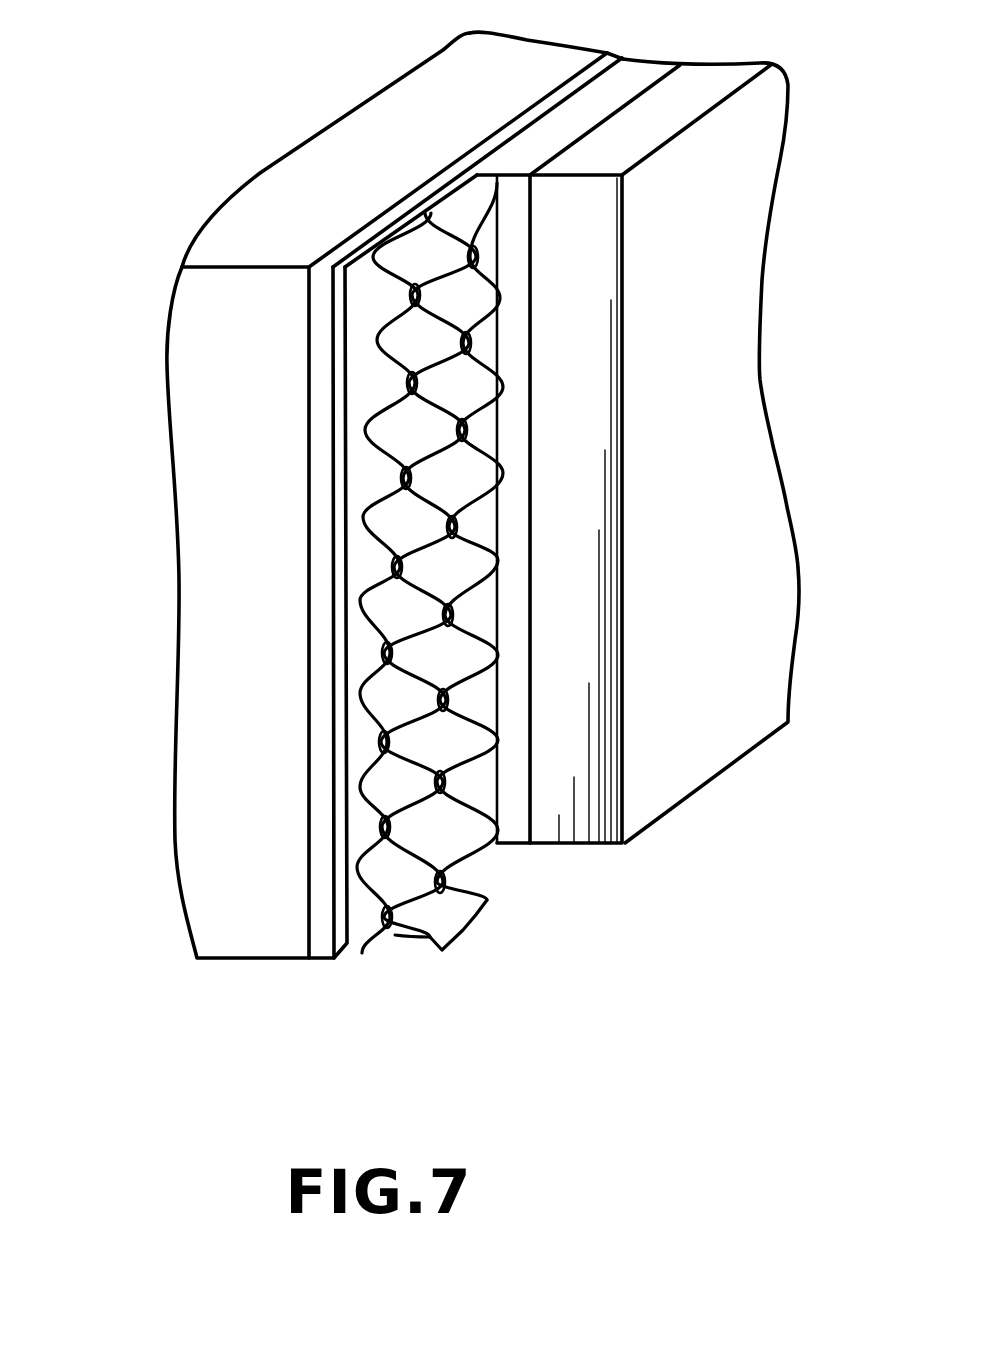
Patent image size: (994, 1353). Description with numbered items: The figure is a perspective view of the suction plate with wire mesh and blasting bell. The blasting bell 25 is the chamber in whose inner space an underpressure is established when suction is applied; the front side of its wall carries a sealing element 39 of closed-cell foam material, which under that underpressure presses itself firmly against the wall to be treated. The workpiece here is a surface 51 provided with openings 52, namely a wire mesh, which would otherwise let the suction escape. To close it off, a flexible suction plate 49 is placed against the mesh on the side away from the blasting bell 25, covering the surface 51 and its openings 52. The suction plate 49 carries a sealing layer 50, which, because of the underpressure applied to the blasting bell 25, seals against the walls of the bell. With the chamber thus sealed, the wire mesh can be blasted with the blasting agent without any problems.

The blasting bell 25 is at (237, 525).
The sealing element 39 is at (327, 952).
The flexible suction plate 49 is at (733, 292).
The sealing layer 50 is at (523, 848).
The surface 51 is at (458, 933).
The openings 52 is at (427, 343).